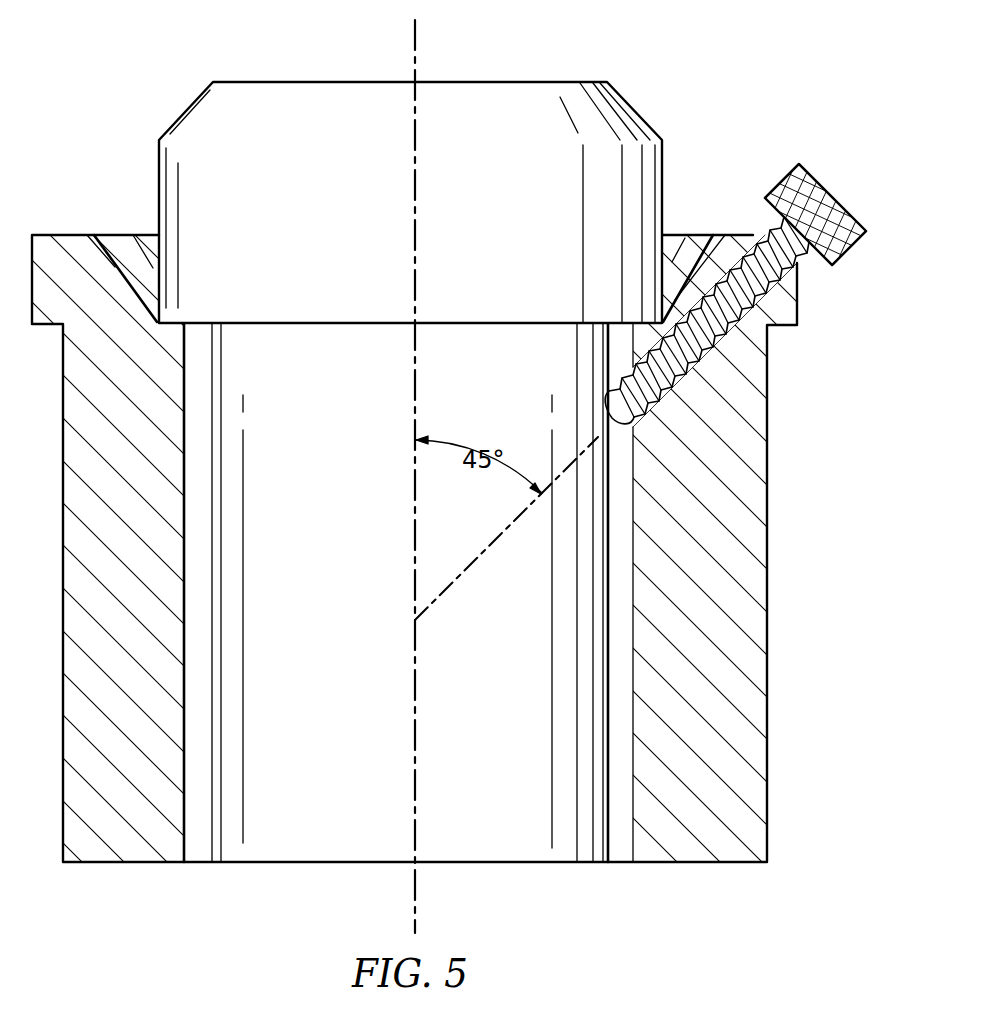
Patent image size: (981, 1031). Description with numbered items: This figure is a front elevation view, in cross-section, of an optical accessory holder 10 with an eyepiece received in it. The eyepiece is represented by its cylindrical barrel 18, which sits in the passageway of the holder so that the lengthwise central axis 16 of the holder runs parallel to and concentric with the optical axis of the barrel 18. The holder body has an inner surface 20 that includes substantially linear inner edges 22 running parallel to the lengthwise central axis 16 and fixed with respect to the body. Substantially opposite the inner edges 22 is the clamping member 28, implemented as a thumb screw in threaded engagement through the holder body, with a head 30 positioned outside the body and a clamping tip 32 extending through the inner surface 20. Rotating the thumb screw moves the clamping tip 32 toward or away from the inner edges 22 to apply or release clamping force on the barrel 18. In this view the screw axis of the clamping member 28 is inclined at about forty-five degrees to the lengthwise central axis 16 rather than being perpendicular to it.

The optical accessory holder 10 is at (780, 643).
The lengthwise central axis 16 is at (414, 40).
The barrel 18 is at (462, 82).
The inner surface 20 is at (622, 572).
The inner edges 22 is at (200, 693).
The clamping member 28 is at (793, 233).
The head 30 is at (856, 228).
The clamping tip 32 is at (607, 430).